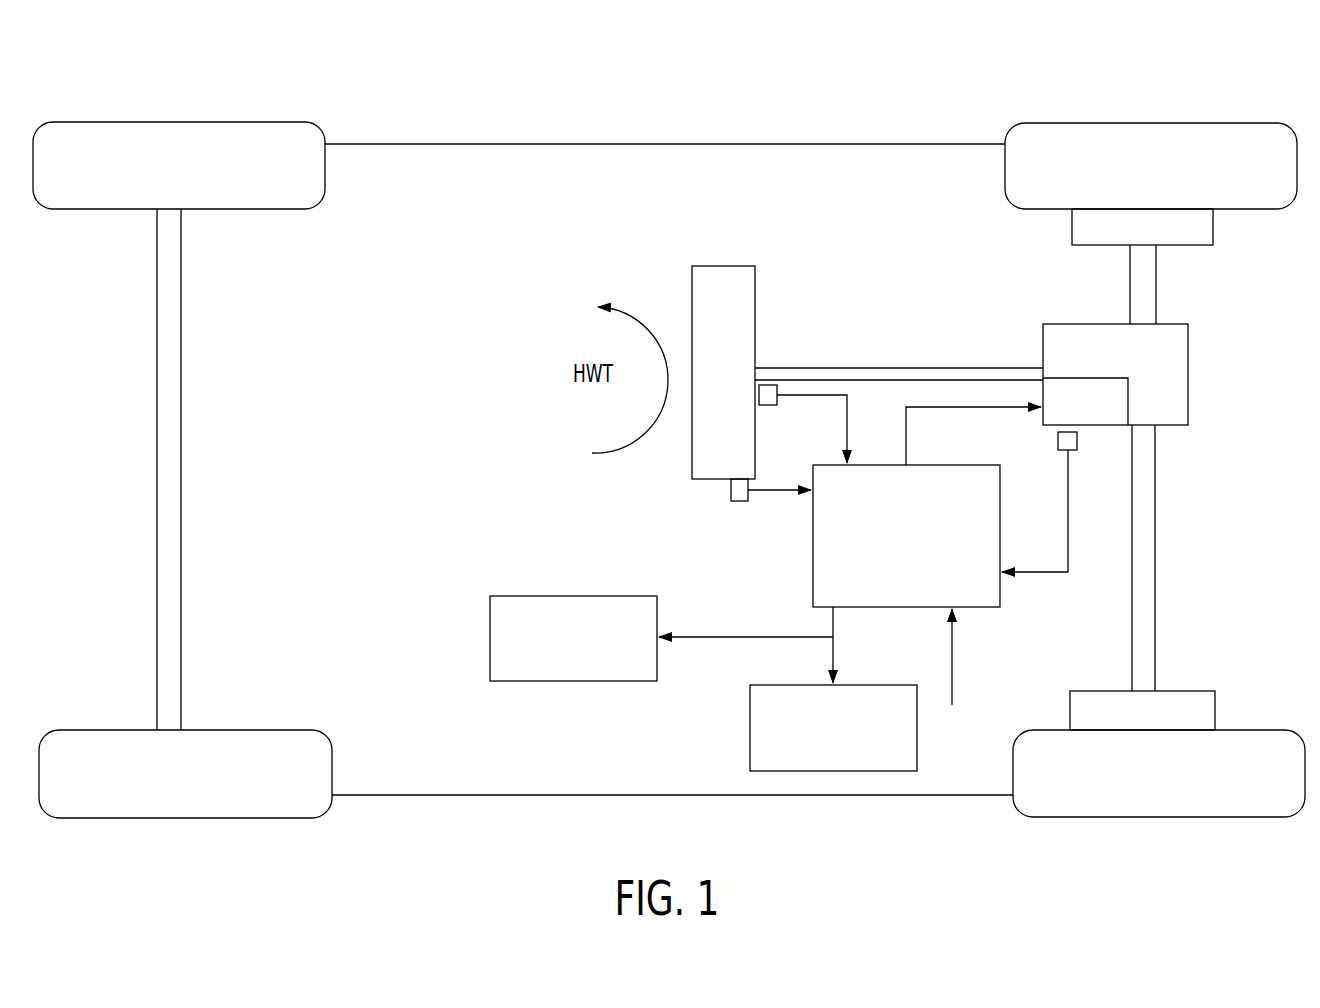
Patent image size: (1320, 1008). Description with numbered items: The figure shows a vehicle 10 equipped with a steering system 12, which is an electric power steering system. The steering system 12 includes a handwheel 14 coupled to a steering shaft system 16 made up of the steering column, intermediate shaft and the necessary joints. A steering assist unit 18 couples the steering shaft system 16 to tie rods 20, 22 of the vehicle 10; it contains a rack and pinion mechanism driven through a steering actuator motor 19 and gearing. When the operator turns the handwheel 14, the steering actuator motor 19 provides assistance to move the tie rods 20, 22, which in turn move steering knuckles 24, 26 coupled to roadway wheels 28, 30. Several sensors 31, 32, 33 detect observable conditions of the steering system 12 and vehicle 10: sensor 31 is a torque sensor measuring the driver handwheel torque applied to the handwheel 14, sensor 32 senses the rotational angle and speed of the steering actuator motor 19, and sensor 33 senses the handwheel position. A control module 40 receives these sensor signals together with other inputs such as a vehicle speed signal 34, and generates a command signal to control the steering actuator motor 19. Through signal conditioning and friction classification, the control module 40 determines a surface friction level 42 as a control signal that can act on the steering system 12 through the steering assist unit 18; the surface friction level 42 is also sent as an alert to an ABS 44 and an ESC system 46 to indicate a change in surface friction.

The vehicle 10 is at (772, 80).
The steering system 12 is at (870, 260).
The handwheel 14 is at (731, 265).
The steering shaft system 16 is at (842, 367).
The steering assist unit 18 is at (1185, 410).
The steering actuator motor 19 is at (1125, 385).
The tie rod 20 is at (1158, 298).
The tie rod 22 is at (1158, 530).
The steering knuckle 24 is at (1072, 225).
The steering knuckle 26 is at (1085, 690).
The roadway wheel 28 is at (1133, 121).
The roadway wheel 30 is at (1251, 729).
The sensor 31 is at (767, 407).
The sensor 32 is at (1072, 452).
The sensor 33 is at (736, 503).
The vehicle speed signal 34 is at (952, 678).
The control module 40 is at (983, 609).
The surface friction level 42 is at (838, 650).
The ABS 44 is at (530, 595).
The ESC system 46 is at (750, 708).